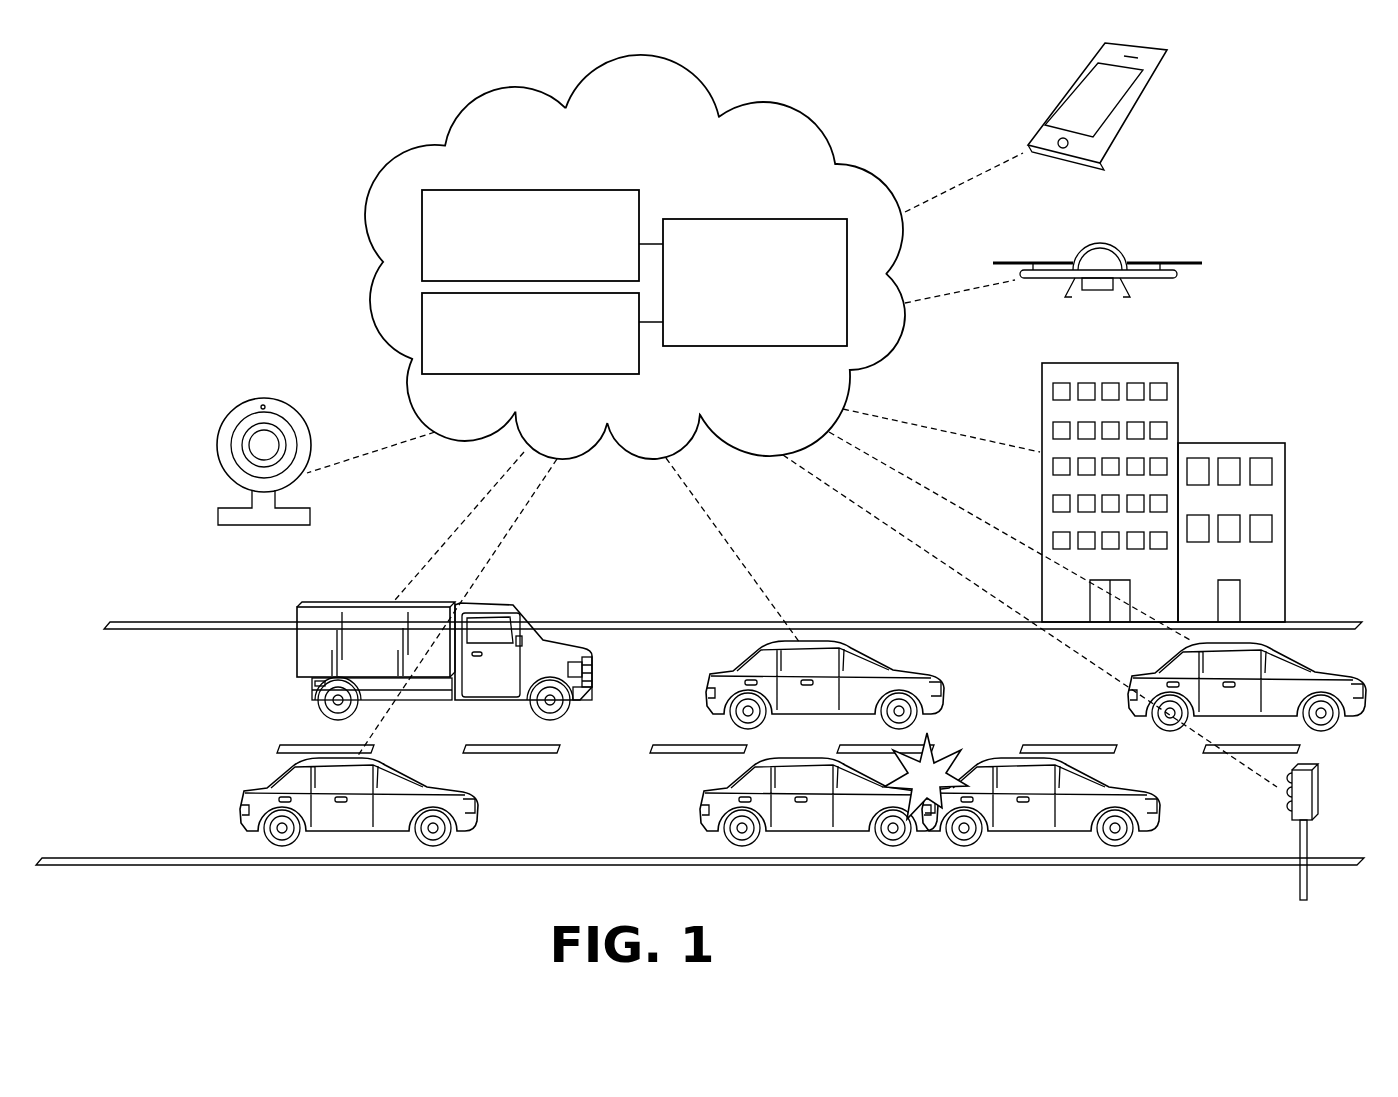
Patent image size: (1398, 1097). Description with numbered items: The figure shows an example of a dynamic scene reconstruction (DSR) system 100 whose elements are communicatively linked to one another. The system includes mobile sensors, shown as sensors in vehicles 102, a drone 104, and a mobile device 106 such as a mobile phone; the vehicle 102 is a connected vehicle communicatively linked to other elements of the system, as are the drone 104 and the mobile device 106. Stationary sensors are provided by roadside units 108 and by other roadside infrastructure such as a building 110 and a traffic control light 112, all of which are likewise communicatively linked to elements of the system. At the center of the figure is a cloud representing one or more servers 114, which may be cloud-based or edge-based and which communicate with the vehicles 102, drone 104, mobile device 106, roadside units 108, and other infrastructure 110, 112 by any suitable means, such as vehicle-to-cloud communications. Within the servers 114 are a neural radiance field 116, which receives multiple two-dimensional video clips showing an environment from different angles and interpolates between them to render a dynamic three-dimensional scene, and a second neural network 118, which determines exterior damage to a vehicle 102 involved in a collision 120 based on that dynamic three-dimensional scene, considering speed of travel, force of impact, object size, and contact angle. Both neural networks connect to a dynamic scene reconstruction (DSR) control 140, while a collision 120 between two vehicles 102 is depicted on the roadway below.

The dynamic scene reconstruction (DSR) system 100 is at (264, 207).
The vehicle 102 is at (297, 650).
The drone 104 is at (1102, 262).
The mobile device 106 is at (1146, 102).
The roadside unit (RSU) 108 is at (227, 421).
The building 110 is at (1225, 443).
The traffic control light 112 is at (1315, 795).
The server 114 is at (635, 257).
The neural radiance field (NeRF) 116 is at (530, 235).
The second neural network 118 is at (530, 333).
The collision 120 is at (921, 835).
The dynamic scene reconstruction (DSR) control 140 is at (755, 282).